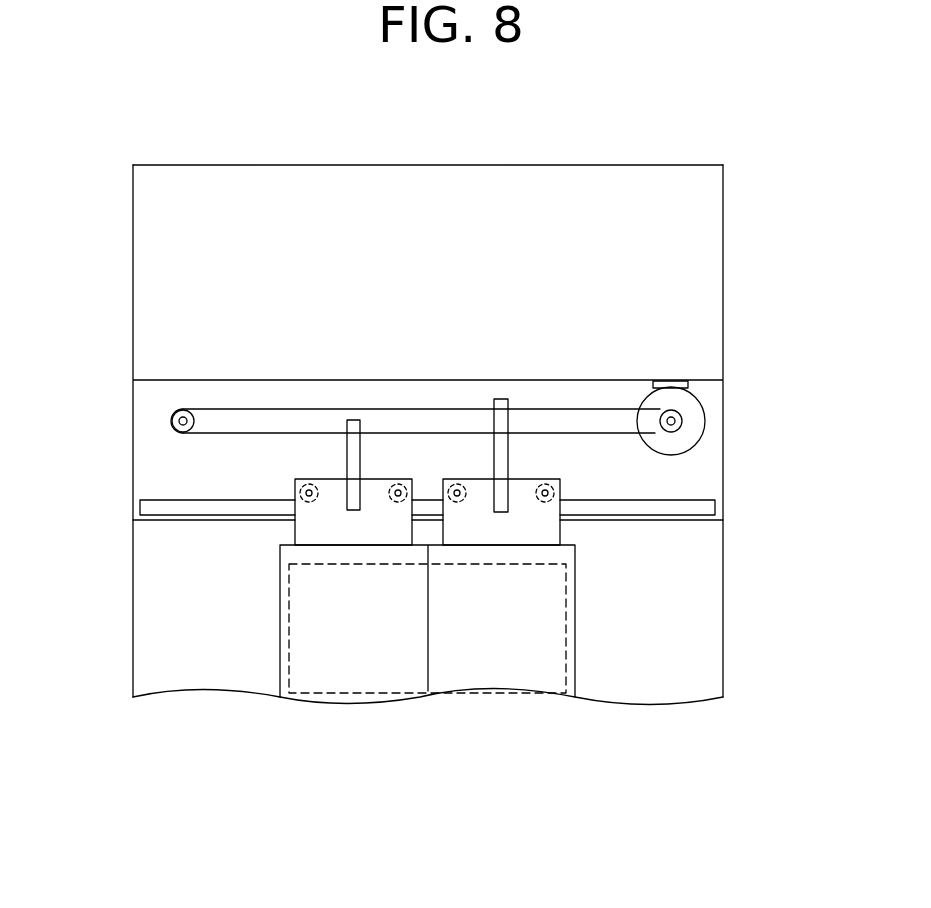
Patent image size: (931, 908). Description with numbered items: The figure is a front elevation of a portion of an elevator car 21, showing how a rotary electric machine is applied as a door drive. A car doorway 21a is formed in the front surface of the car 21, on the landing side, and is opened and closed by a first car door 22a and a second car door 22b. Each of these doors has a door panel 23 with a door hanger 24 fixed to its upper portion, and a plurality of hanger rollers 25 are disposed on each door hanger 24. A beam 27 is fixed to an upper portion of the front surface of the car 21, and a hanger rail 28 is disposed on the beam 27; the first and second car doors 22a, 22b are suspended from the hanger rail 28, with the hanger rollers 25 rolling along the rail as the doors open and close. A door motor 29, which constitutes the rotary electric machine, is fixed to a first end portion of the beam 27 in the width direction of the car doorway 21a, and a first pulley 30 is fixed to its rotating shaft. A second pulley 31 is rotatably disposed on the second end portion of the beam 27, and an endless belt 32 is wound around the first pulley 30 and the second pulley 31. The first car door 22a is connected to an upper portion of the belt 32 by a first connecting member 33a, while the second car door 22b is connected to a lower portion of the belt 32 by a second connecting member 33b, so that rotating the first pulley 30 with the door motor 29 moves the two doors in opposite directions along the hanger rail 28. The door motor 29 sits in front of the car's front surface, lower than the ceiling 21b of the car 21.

The car 21 is at (723, 578).
The car doorway 21a is at (575, 622).
The ceiling 21b is at (632, 165).
The first car door 22a is at (575, 663).
The second car door 22b is at (280, 617).
The door panel 23 is at (522, 668).
The door hanger 24 is at (550, 530).
The hanger roller 25 is at (560, 480).
The beam 27 is at (150, 433).
The hanger rail 28 is at (185, 500).
The door motor 29 is at (670, 388).
The first pulley 30 is at (682, 421).
The second pulley 31 is at (183, 409).
The belt 32 is at (275, 409).
The first connecting member 33a is at (502, 399).
The second connecting member 33b is at (355, 420).